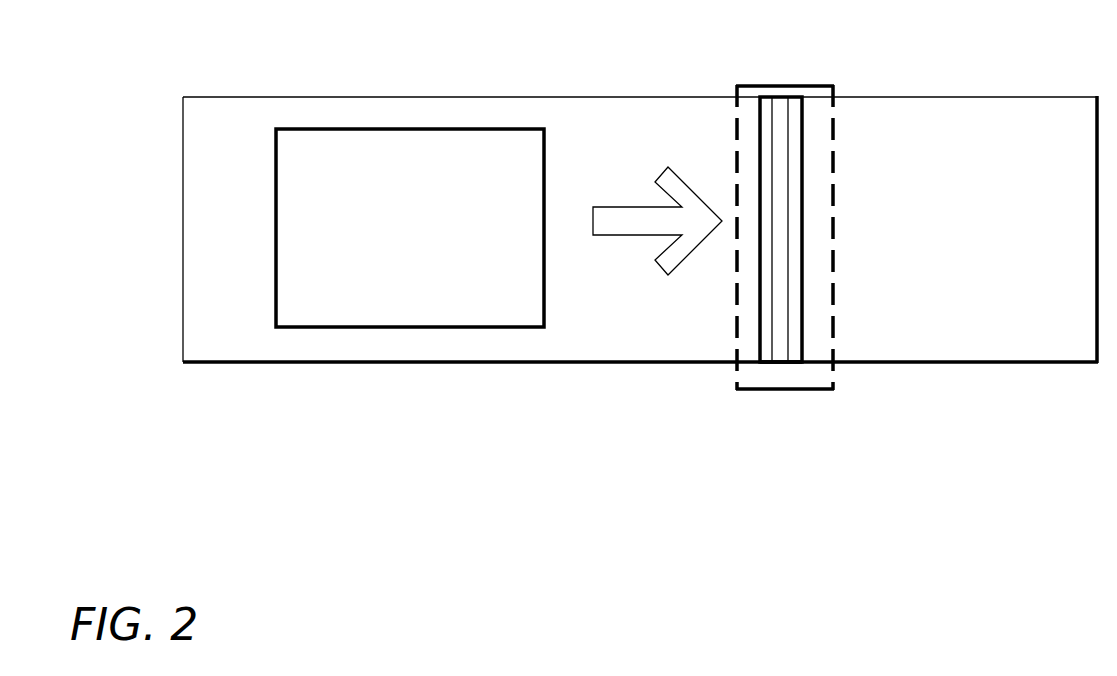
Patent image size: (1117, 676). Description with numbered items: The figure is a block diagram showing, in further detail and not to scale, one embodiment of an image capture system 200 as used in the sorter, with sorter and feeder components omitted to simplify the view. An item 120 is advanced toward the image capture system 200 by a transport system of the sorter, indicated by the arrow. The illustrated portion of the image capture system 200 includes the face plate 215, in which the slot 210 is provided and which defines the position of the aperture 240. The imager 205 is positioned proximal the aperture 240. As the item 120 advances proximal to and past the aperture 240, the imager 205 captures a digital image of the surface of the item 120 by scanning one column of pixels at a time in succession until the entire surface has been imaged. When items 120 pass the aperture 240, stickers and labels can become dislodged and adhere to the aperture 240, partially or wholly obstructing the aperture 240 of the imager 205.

The item 120 is at (411, 327).
The image capture system 200 is at (640, 319).
The imager 205 is at (835, 86).
The slot 210 is at (803, 203).
The face plate 215 is at (638, 97).
The aperture 240 is at (782, 363).